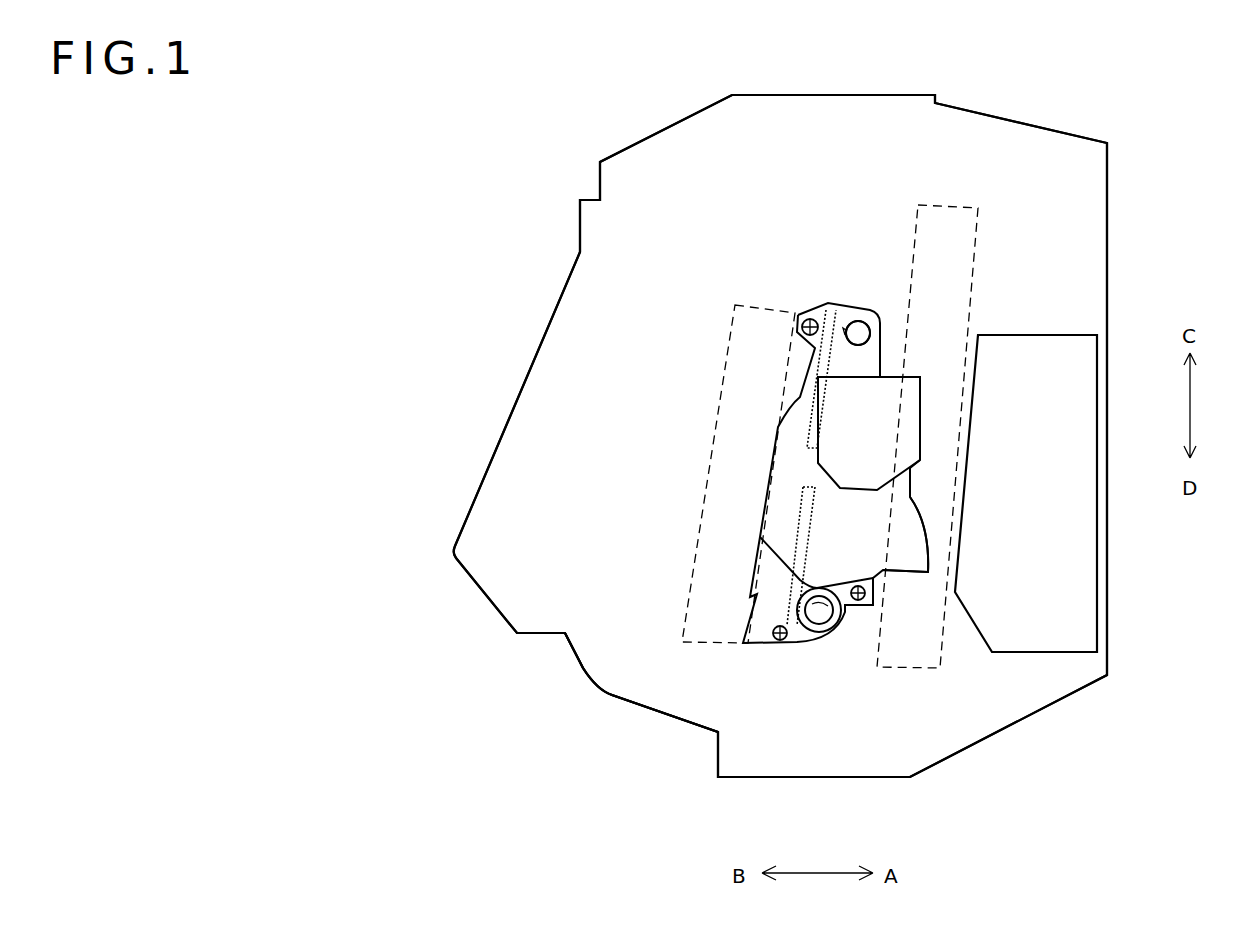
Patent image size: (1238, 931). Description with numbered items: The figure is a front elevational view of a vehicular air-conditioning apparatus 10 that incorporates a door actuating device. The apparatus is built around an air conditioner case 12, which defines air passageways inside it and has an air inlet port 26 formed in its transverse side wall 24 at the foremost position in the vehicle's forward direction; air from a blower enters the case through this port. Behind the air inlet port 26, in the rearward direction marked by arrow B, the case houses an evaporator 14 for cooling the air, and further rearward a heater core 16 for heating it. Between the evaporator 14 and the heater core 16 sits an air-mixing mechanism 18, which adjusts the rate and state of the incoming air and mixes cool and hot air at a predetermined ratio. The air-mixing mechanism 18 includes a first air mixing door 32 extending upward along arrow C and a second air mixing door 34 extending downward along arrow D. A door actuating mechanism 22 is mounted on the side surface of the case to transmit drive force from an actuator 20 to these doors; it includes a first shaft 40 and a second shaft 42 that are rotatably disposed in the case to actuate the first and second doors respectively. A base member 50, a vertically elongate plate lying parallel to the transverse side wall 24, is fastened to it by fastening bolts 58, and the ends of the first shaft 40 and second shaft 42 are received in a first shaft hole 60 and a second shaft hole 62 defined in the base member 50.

The vehicular air-conditioning apparatus 10 is at (566, 127).
The air conditioner case 12 is at (1093, 125).
The evaporator 14 is at (973, 233).
The heater core 16 is at (747, 325).
The air-mixing mechanism 18 is at (825, 533).
The actuator 20 is at (887, 388).
The door actuating mechanism 22 is at (857, 300).
The transverse side wall 24 is at (618, 690).
The air inlet port 26 is at (1078, 562).
The first air mixing door 32 is at (810, 436).
The second air mixing door 34 is at (807, 501).
The first shaft 40 is at (858, 346).
The second shaft 42 is at (828, 620).
The base member 50 is at (912, 563).
The fastening bolt 58 is at (808, 317).
The first shaft hole 60 is at (866, 325).
The second shaft hole 62 is at (814, 633).